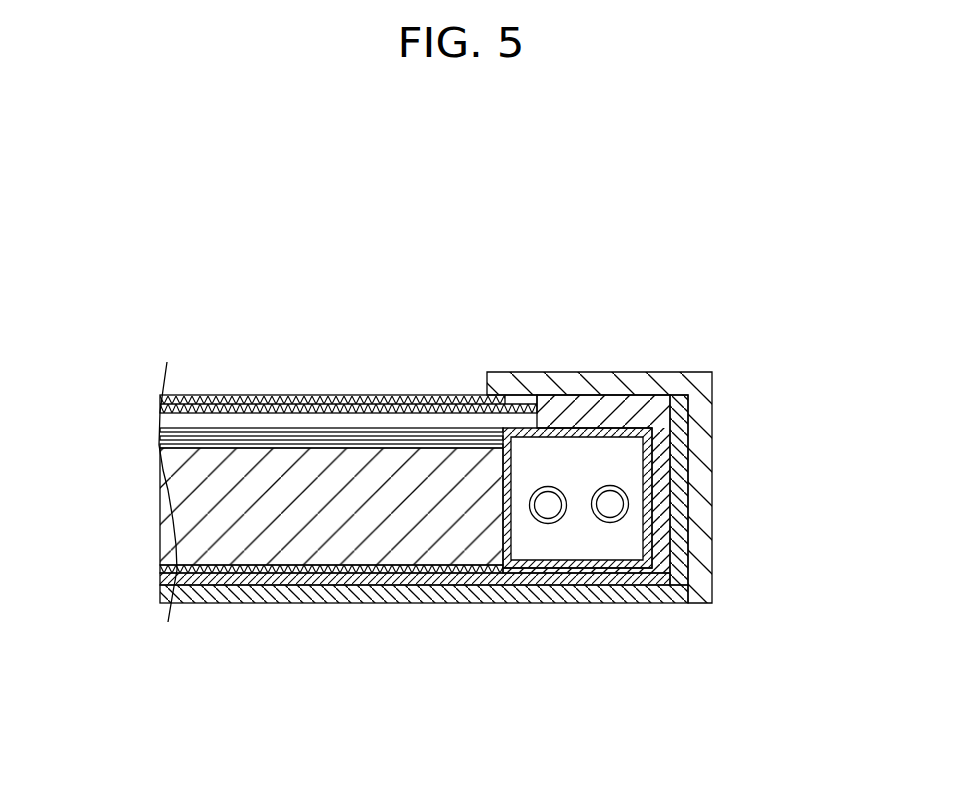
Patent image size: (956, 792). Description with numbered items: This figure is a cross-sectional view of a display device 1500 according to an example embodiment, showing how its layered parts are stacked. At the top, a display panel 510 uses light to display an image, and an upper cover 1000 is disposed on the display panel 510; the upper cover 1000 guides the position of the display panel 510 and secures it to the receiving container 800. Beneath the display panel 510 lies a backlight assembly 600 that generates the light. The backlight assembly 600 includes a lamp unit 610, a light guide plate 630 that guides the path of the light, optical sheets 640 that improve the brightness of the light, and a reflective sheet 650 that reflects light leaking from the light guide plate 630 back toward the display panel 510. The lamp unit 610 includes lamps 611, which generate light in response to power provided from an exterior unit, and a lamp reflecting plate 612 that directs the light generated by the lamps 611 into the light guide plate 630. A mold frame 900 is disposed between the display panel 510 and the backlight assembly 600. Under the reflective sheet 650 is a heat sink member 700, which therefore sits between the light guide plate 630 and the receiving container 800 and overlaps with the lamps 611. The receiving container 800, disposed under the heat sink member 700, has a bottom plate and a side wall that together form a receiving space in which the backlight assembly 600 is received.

The display device 1500 is at (445, 248).
The upper cover 1000 is at (565, 372).
The mold frame 900 is at (673, 419).
The lamp unit 610 is at (673, 484).
The lamps 611 is at (652, 498).
The lamp reflecting plate 612 is at (664, 474).
The display panel 510 is at (356, 395).
The backlight assembly 600 is at (276, 553).
The optical sheets 640 is at (156, 430).
The light guide plate 630 is at (293, 566).
The reflective sheet 650 is at (207, 563).
The heat sink member 700 is at (365, 574).
The receiving container 800 is at (478, 590).